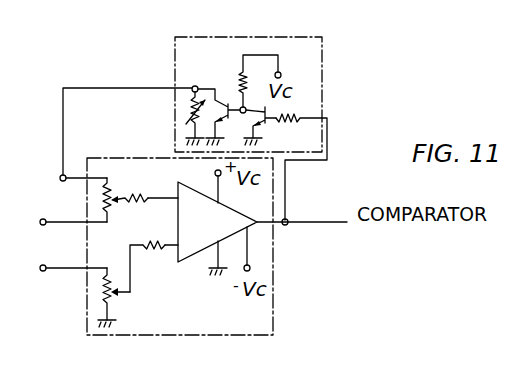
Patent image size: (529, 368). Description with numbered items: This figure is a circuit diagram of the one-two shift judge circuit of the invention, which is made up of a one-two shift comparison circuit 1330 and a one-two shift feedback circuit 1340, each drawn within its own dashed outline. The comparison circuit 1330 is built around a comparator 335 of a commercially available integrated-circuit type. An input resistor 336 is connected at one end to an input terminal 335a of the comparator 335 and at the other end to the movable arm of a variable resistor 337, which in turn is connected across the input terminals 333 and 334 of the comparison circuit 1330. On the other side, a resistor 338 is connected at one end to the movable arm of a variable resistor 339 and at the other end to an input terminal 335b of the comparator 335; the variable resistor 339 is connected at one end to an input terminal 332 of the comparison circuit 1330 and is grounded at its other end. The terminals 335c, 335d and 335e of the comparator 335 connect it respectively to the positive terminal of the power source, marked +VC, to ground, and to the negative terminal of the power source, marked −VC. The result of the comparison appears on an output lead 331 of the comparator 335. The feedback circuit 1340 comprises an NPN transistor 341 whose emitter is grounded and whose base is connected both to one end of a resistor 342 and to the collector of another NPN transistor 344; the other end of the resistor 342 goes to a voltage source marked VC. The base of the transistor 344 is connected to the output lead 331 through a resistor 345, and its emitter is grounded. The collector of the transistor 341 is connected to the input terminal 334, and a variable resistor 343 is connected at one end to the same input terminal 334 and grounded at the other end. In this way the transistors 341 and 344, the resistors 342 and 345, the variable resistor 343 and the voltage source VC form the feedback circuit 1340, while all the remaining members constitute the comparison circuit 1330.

The 1-2 shift feedback circuit 1340 is at (322, 53).
The 1-2 shift comparison circuit 1330 is at (120, 337).
The NPN transistor 341 is at (227, 98).
The resistor 342 is at (238, 80).
The variable resistor 343 is at (183, 112).
The NPN transistor 344 is at (259, 124).
The resistor 345 is at (268, 113).
The input terminal 334 is at (75, 177).
The input terminal 333 is at (65, 222).
The input terminal 332 is at (72, 272).
The output lead 331 is at (308, 227).
The comparator 335 is at (250, 212).
The input terminal of the comparator 335a is at (163, 197).
The input terminal of the comparator 335b is at (170, 243).
The terminal of the comparator 335c is at (222, 192).
The terminal of the comparator 335d is at (212, 257).
The terminal of the comparator 335e is at (253, 262).
The input resistor 336 is at (137, 181).
The variable resistor 337 is at (103, 198).
The resistor 338 is at (153, 253).
The variable resistor 339 is at (100, 291).